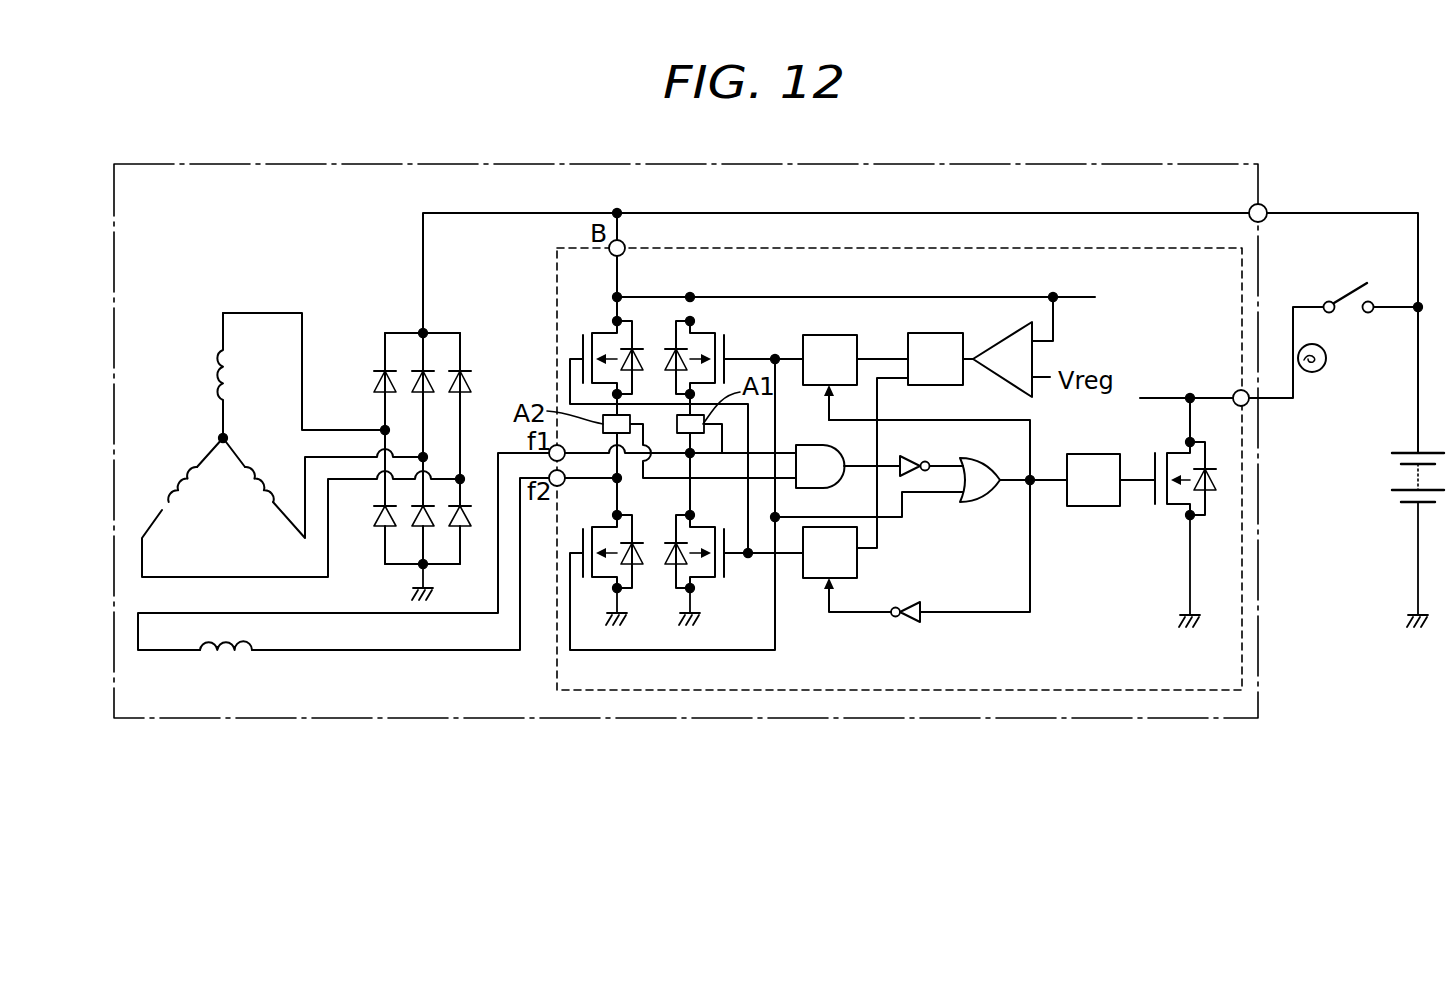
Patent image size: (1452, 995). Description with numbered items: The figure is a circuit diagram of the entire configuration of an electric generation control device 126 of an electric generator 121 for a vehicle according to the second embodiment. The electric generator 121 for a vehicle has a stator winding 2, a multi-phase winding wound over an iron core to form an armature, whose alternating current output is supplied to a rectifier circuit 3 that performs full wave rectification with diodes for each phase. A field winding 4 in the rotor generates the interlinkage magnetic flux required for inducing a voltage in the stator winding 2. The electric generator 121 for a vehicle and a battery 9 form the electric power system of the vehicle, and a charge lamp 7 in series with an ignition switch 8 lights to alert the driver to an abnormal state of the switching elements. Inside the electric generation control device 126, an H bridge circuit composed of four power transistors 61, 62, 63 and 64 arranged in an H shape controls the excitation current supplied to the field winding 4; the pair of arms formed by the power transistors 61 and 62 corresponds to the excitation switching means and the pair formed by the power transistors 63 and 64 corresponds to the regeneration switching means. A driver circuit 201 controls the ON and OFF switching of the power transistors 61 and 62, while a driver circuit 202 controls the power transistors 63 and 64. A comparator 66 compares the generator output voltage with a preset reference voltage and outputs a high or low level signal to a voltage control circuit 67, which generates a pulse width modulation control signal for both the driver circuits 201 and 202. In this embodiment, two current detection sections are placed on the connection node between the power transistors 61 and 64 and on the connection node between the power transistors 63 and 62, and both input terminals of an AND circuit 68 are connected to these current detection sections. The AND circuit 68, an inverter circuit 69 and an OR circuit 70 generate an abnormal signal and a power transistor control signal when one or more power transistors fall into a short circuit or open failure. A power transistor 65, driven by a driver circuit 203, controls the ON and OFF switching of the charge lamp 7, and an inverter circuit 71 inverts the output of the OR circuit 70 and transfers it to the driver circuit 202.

The stator winding 2 is at (200, 348).
The rectifier circuit 3 is at (380, 316).
The field winding 4 is at (240, 656).
The charge lamp 7 is at (1318, 373).
The ignition switch 8 is at (1345, 292).
The battery 9 is at (1412, 452).
The power transistor 61 is at (716, 331).
The power transistor 62 is at (606, 526).
The power transistor 63 is at (606, 331).
The power transistor 64 is at (706, 527).
The power transistor 65 is at (1178, 449).
The comparator 66 is at (992, 343).
The voltage control circuit 67 is at (913, 335).
The AND circuit 68 is at (802, 444).
The inverter circuit 69 is at (914, 455).
The OR circuit 70 is at (990, 502).
The inverter circuit 71 is at (908, 601).
The electric generator for a vehicle 121 is at (686, 441).
The electric generation control device 126 is at (899, 469).
The driver circuit 201 is at (830, 360).
The driver circuit 202 is at (830, 552).
The driver circuit 203 is at (1093, 480).